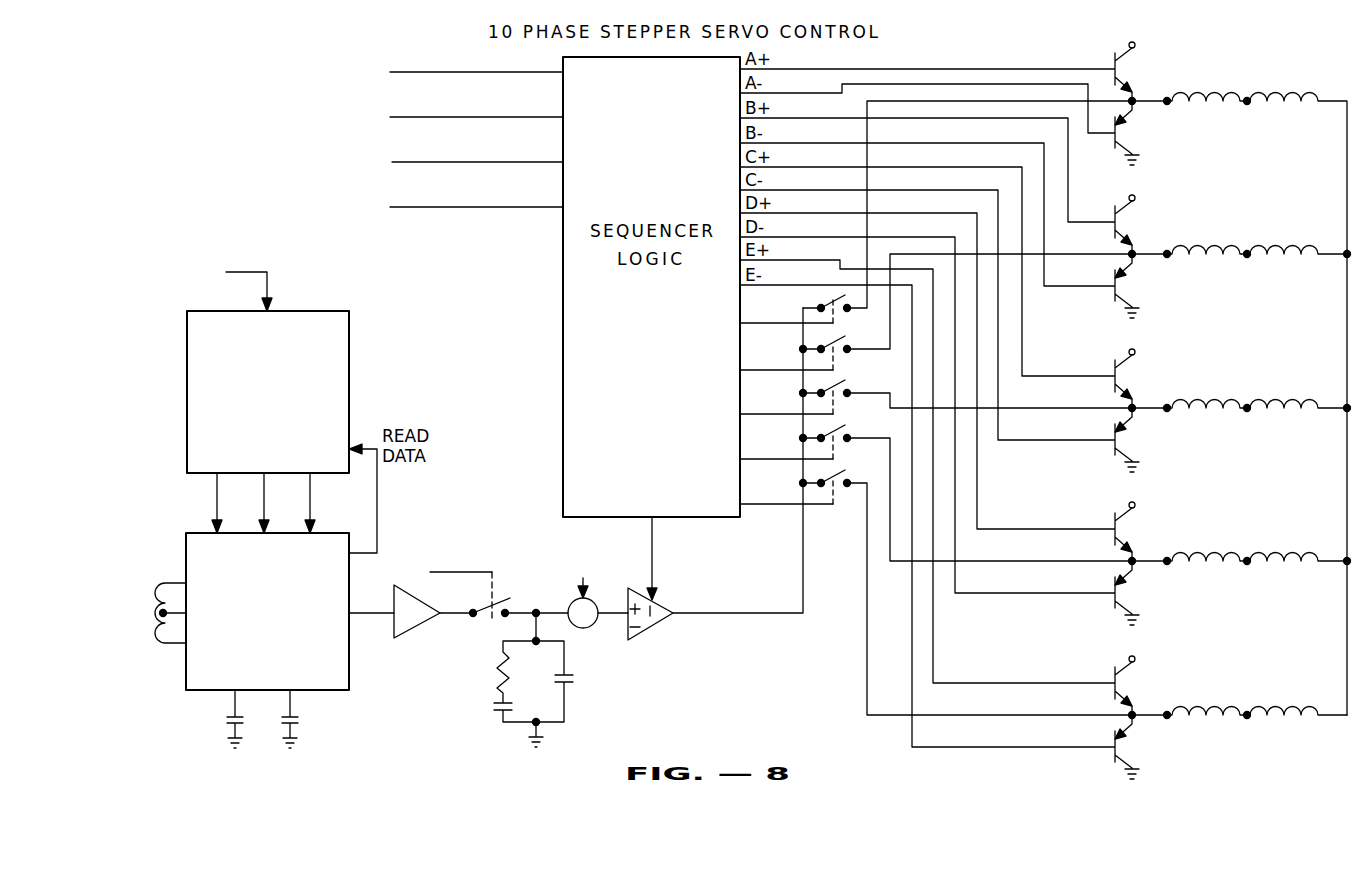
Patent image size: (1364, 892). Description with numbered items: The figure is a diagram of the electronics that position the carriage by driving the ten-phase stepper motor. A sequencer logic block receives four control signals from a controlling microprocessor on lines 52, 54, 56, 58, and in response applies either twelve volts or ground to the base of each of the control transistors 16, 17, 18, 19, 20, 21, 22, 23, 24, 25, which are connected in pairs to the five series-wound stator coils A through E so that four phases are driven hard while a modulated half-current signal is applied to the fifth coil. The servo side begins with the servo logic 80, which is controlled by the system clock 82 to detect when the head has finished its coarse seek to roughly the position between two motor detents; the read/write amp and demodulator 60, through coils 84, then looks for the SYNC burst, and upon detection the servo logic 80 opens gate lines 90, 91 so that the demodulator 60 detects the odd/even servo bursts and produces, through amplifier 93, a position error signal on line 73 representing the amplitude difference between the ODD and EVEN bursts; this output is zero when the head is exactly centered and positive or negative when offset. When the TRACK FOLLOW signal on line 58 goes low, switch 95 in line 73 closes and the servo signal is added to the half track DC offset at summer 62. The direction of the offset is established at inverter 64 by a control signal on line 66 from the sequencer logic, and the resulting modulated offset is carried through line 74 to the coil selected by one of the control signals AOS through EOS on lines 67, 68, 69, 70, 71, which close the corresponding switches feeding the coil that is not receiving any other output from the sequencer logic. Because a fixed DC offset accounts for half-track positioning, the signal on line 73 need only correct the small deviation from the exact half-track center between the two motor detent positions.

The control transistor 16 is at (1111, 52).
The control transistor 17 is at (1108, 146).
The control transistor 18 is at (1115, 210).
The control transistor 19 is at (1108, 299).
The control transistor 20 is at (1110, 368).
The control transistor 21 is at (1110, 452).
The control transistor 22 is at (1112, 524).
The control transistor 23 is at (1114, 603).
The control transistor 24 is at (1112, 678).
The control transistor 25 is at (1110, 759).
The control signal line 52 is at (420, 72).
The control signal line 54 is at (445, 117).
The control signal line 56 is at (452, 162).
The track follow line 58 is at (470, 210).
The read/write amp and demodulator 60 is at (343, 673).
The summer 62 is at (597, 624).
The inverter 64 is at (647, 635).
The control line 66 is at (652, 580).
The AOS control line 67 is at (795, 322).
The BOS control line 68 is at (795, 364).
The COS control line 69 is at (795, 408).
The DOS control line 70 is at (795, 453).
The EOS control line 71 is at (795, 498).
The servo signal line 73 is at (363, 610).
The output line 74 is at (762, 625).
The servo logic 80 is at (345, 350).
The system clock 82 is at (267, 285).
The coils 84 is at (175, 585).
The gate line 90 is at (215, 496).
The gate line 91 is at (263, 495).
The amplifier 93 is at (403, 632).
The switch 95 is at (518, 578).